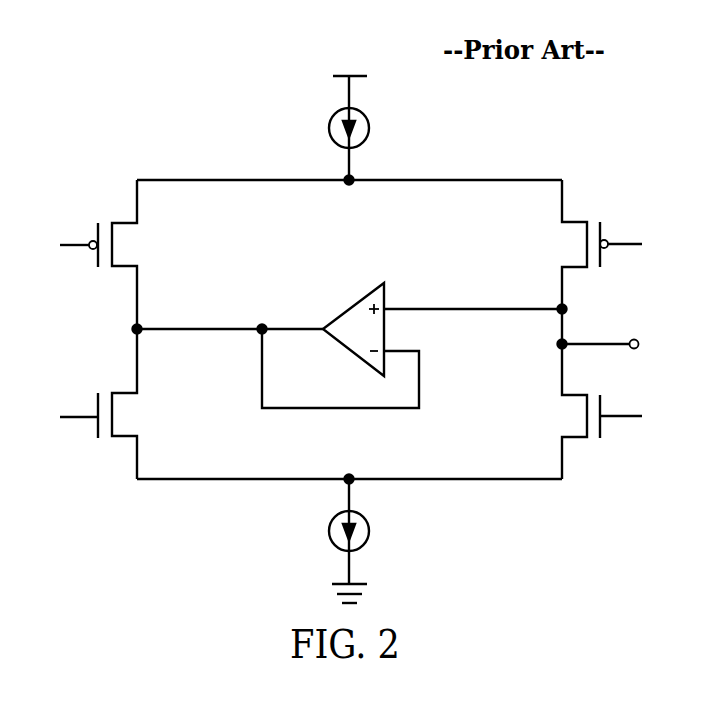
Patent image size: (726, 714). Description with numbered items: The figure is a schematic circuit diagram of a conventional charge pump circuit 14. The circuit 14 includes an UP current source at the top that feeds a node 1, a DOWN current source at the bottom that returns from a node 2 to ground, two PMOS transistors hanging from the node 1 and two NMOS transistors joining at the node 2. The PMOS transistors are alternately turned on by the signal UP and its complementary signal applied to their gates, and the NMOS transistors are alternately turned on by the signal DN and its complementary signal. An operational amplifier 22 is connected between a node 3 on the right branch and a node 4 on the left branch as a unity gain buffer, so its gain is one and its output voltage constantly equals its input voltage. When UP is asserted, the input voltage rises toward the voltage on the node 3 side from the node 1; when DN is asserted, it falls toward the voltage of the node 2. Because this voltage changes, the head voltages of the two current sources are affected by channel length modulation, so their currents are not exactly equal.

The conventional CP circuit 14 is at (64, 62).
The operational amplifier 22 is at (355, 302).
The node N1 1 is at (345, 196).
The node N2 2 is at (347, 463).
The node N3 3 is at (538, 296).
The node N4 4 is at (259, 314).